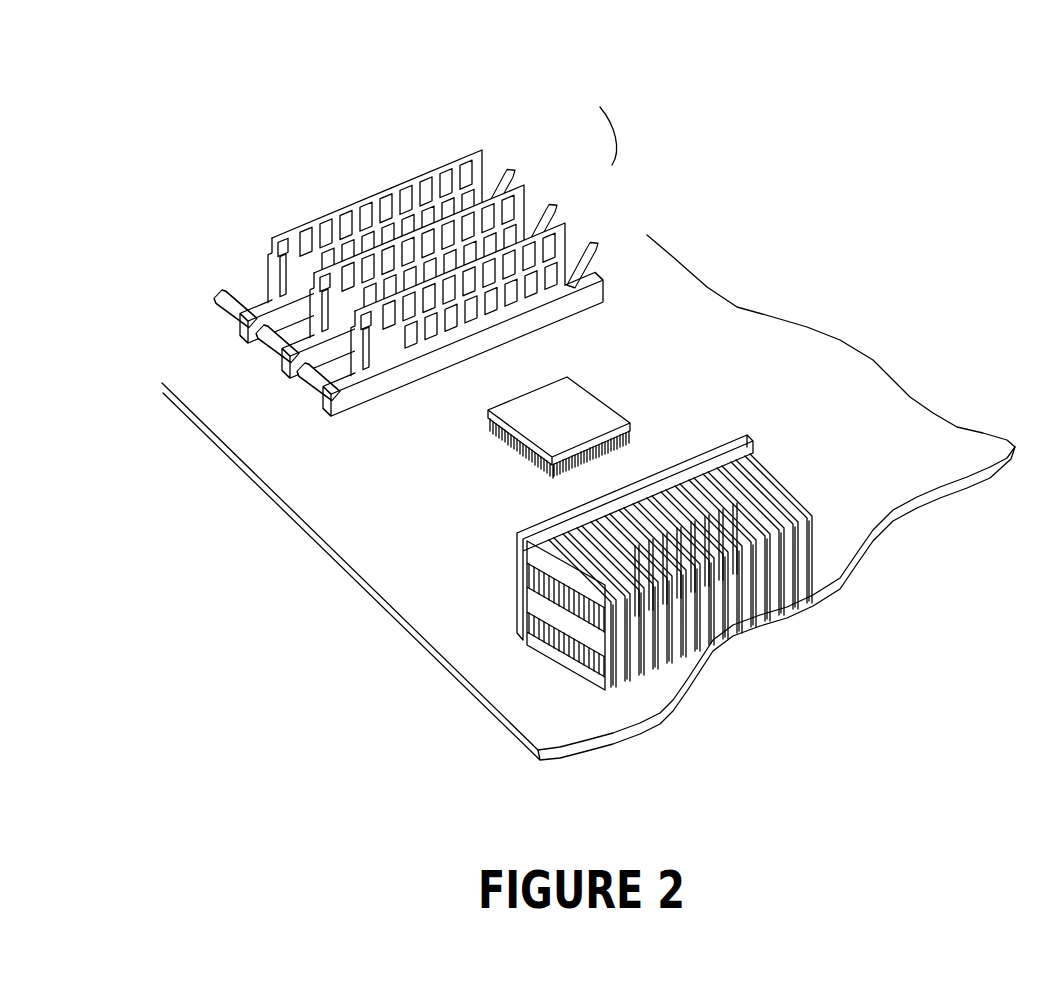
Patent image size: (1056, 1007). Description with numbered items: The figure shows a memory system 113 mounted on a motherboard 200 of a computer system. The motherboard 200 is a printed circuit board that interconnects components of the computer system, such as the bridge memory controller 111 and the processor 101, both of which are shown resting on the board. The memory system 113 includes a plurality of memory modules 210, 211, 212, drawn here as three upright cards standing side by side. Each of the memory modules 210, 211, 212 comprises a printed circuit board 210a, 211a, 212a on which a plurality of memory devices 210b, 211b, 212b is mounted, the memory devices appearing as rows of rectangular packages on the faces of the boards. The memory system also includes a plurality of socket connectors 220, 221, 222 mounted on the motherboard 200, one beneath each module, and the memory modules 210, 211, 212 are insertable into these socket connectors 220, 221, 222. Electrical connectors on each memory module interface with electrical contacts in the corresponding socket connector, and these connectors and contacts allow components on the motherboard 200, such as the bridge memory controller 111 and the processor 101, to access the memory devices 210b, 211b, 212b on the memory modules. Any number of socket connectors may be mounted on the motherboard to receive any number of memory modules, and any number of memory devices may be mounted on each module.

The motherboard 200 is at (853, 528).
The processor 101 is at (748, 435).
The bridge memory controller 111 is at (583, 405).
The memory system 113 is at (568, 90).
The memory module 210 is at (580, 235).
The printed circuit board 210a is at (558, 222).
The memory devices 210b is at (413, 343).
The memory module 211 is at (535, 155).
The printed circuit board 211a is at (505, 185).
The memory devices 211b is at (388, 238).
The memory module 212 is at (453, 148).
The printed circuit board 212a is at (480, 149).
The memory devices 212b is at (348, 203).
The socket connector 220 is at (325, 398).
The socket connector 221 is at (292, 360).
The socket connector 222 is at (243, 327).